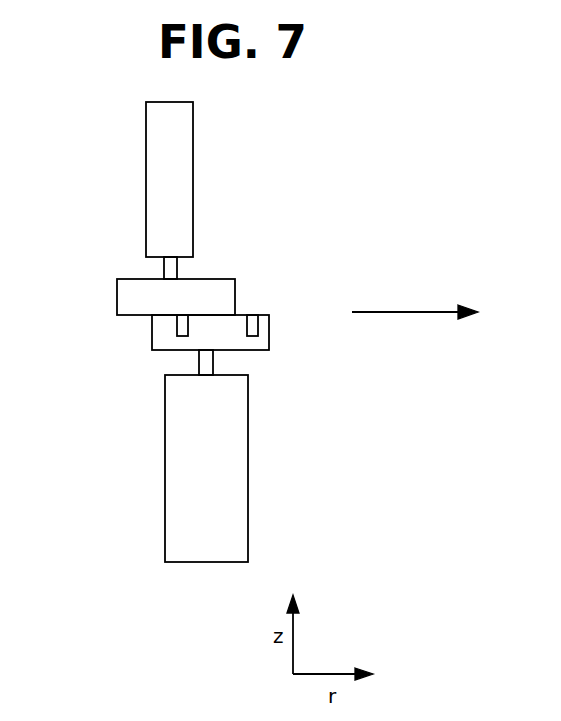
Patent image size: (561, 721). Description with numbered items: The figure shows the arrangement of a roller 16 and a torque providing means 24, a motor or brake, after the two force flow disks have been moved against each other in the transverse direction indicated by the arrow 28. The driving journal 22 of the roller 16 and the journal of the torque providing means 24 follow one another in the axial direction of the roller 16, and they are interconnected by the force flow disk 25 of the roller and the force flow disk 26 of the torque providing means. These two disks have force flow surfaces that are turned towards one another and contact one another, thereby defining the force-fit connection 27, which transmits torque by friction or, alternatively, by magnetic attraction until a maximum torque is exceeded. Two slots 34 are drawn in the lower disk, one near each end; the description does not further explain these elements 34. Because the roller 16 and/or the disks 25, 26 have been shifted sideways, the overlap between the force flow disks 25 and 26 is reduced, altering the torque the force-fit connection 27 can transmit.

The roller 16 is at (158, 167).
The driving journal 22 is at (167, 268).
The torque providing means 24 is at (232, 473).
The force flow disk of roller 25 is at (130, 295).
The force flow disk of torque providing means 26 is at (212, 332).
The force-fit connection 27 is at (211, 286).
The arrow in y direction 28 is at (415, 298).
The slots 34 is at (175, 327).